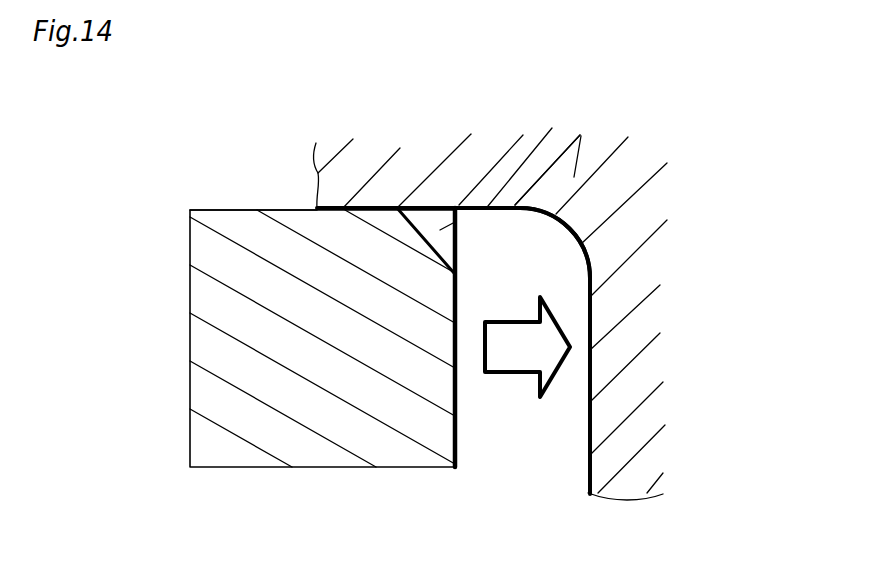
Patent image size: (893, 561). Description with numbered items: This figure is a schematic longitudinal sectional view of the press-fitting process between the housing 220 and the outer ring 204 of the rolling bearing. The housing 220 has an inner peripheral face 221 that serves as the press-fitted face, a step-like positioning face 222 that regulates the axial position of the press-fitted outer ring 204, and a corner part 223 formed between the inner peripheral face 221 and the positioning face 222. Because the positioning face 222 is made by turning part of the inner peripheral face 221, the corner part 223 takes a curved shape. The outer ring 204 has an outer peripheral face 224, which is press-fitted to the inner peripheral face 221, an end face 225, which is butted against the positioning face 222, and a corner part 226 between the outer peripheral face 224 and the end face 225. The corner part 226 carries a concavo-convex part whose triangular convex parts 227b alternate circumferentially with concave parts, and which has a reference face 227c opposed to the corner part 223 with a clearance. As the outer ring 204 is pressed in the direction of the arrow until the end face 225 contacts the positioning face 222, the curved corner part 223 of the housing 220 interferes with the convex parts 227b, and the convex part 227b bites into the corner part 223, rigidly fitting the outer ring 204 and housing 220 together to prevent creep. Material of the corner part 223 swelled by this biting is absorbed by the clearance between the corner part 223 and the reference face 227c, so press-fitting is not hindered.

The outer ring 204 is at (297, 443).
The housing 220 is at (628, 137).
The inner peripheral face 221 is at (370, 208).
The positioning face 222 is at (592, 378).
The corner part 223 is at (578, 238).
The outer peripheral face 224 is at (240, 208).
The end face 225 is at (457, 415).
The corner part 226 is at (454, 207).
The convex parts 227b is at (513, 205).
The reference face 227c is at (438, 248).